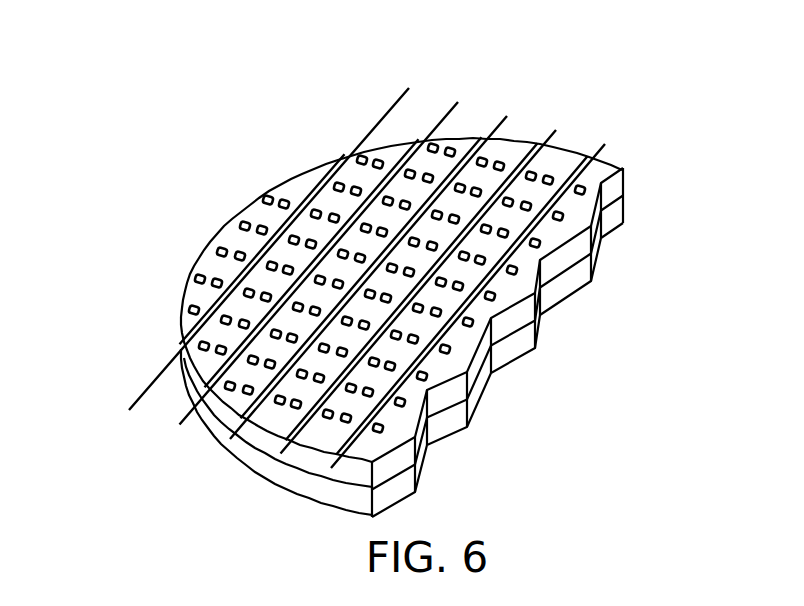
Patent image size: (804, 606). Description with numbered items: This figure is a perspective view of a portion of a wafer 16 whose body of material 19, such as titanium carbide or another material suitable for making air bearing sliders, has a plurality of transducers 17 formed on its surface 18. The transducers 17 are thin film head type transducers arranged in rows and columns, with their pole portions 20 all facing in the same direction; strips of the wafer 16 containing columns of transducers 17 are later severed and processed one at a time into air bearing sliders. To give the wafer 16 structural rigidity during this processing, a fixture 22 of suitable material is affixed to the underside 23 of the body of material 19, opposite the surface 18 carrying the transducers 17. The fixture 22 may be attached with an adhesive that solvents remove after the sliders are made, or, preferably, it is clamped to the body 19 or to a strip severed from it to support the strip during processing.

The wafer 16 is at (421, 266).
The transducers 17 is at (490, 176).
The surface 18 is at (498, 160).
The body of material 19 is at (608, 188).
The pole portions 20 is at (604, 212).
The fixture 22 is at (612, 216).
The underside 23 is at (610, 204).